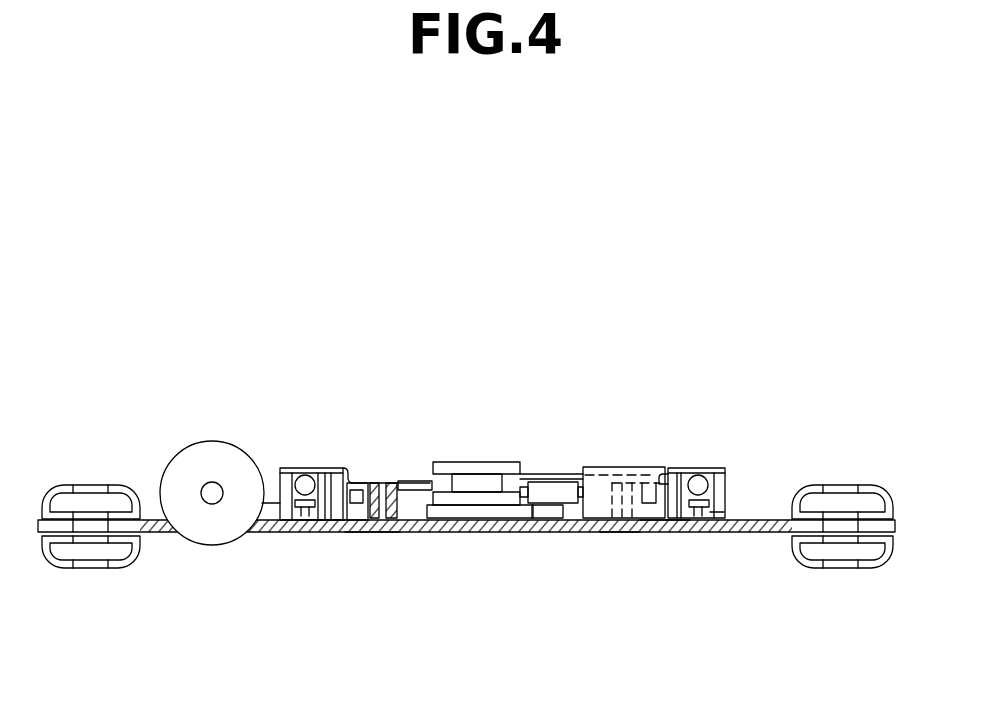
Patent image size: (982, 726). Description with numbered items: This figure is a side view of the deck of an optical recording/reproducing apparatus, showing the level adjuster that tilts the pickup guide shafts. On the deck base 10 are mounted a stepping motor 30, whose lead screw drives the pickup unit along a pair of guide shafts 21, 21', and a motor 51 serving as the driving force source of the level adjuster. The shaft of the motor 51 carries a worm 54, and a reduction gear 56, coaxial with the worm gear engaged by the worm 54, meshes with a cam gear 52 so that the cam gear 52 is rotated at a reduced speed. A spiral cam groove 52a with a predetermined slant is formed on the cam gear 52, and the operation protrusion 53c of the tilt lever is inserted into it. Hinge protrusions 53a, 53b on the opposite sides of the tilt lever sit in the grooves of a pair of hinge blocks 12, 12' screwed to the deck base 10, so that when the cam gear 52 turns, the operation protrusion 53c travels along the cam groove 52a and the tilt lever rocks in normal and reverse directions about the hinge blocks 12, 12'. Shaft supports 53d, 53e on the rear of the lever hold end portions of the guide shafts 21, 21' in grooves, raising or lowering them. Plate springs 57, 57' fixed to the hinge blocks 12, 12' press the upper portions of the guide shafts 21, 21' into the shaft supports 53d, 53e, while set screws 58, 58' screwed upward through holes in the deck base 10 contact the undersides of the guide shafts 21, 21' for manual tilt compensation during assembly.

The deck base 10 is at (768, 519).
The hinge block 12 is at (372, 582).
The hinge block 12' is at (597, 565).
The guide shaft 21 is at (291, 440).
The guide shaft 21' is at (696, 447).
The stepping motor 30 is at (177, 465).
The motor 51 is at (607, 466).
The cam gear 52 is at (472, 462).
The spiral cam groove 52a is at (452, 484).
The hinge protrusion 53a is at (354, 503).
The hinge protrusion 53b is at (650, 505).
The operation protrusion 53c is at (427, 507).
The shaft support 53d is at (268, 500).
The shaft support 53e is at (717, 513).
The worm 54 is at (545, 482).
The reduction gear 56 is at (540, 513).
The plate spring 57 is at (355, 438).
The plate spring 57' is at (640, 426).
The set screw 58 is at (270, 551).
The set screw 58' is at (698, 565).